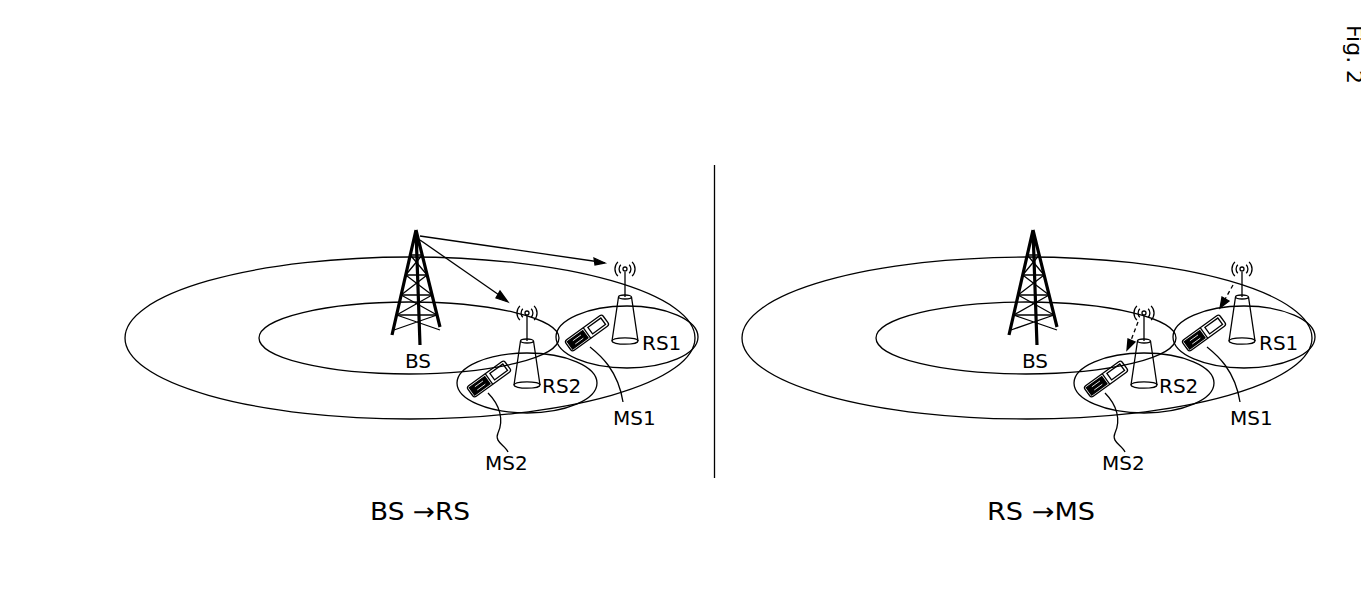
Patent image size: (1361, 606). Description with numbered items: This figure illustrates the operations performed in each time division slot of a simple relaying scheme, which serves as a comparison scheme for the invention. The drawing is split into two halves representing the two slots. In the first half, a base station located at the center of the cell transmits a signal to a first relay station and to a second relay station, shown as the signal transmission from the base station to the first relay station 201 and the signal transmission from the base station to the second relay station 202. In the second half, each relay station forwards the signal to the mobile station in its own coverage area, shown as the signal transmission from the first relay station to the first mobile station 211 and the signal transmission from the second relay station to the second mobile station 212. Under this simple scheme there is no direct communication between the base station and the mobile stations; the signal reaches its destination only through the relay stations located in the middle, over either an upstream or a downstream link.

The signal transmission from BS to RS 1 201 is at (512, 248).
The signal transmission from BS to RS 2 202 is at (469, 271).
The signal transmission from RS 1 to MS 1 211 is at (1206, 293).
The signal transmission from RS 2 to MS 2 212 is at (1113, 334).